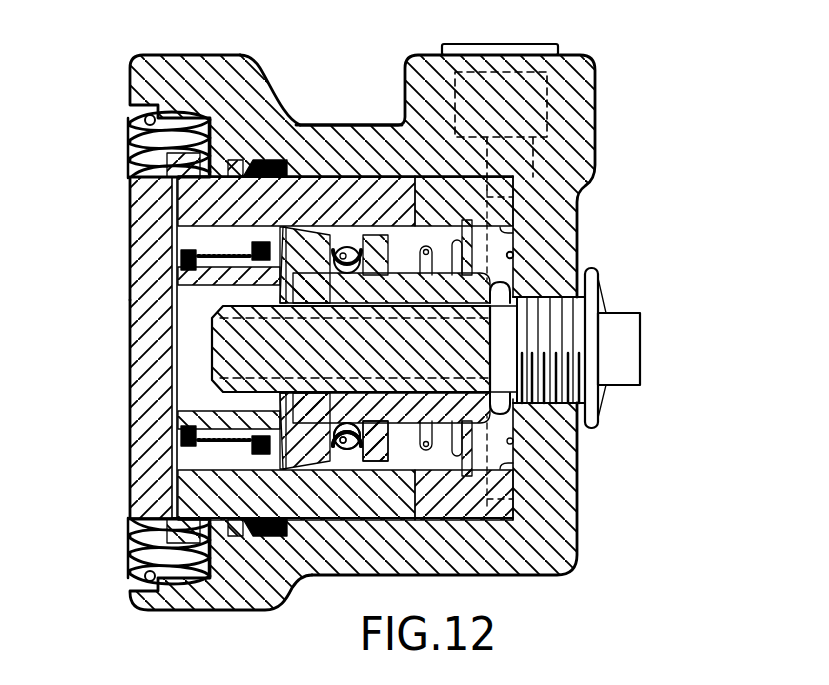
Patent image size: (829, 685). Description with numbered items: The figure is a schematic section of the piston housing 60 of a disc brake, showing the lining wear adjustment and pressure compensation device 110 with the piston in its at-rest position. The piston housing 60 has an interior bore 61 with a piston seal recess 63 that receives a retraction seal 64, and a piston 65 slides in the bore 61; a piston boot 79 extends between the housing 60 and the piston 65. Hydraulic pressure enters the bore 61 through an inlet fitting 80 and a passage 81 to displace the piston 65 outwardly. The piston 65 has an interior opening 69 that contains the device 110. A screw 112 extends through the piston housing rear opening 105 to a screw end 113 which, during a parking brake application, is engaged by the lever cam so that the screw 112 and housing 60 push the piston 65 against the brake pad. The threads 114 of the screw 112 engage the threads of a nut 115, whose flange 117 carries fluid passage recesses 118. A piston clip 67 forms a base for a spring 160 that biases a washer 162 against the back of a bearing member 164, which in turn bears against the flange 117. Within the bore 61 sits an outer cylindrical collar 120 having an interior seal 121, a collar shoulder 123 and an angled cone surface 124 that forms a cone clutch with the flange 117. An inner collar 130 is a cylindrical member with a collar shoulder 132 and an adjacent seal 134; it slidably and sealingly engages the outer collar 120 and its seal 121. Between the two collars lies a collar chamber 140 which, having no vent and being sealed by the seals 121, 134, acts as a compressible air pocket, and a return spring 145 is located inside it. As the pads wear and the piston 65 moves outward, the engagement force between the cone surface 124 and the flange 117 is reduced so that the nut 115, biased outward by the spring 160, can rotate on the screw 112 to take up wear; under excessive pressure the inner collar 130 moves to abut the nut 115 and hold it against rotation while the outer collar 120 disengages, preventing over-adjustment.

The piston housing 60 is at (594, 104).
The interior bore 61 is at (515, 281).
The piston seal recess 63 is at (292, 122).
The retraction seal 64 is at (256, 102).
The piston 65 is at (138, 192).
The piston clip 67 is at (478, 478).
The interior opening 69 is at (515, 248).
The piston boot 79 is at (130, 152).
The inlet fitting 80 is at (533, 44).
The passage 81 is at (510, 288).
The piston housing rear opening 105 is at (590, 429).
The lining wear adjustment and pressure compensation device 110 is at (662, 248).
The screw 112 is at (578, 464).
The screw end 113 is at (640, 341).
The threads 114 is at (176, 402).
The nut 115 is at (578, 509).
The flange 117 is at (347, 246).
The fluid passage recesses 118 is at (332, 232).
The outer cylindrical collar 120 is at (147, 510).
The seal 121 is at (266, 172).
The collar shoulder 123 is at (252, 244).
The cone surface 124 is at (344, 452).
The inner collar 130 is at (220, 432).
The collar shoulder 132 is at (181, 255).
The seal 134 is at (200, 264).
The collar chamber 140 is at (200, 285).
The return spring 145 is at (235, 300).
The spring 160 is at (425, 450).
The washer 162 is at (390, 452).
The bearing member 164 is at (320, 462).